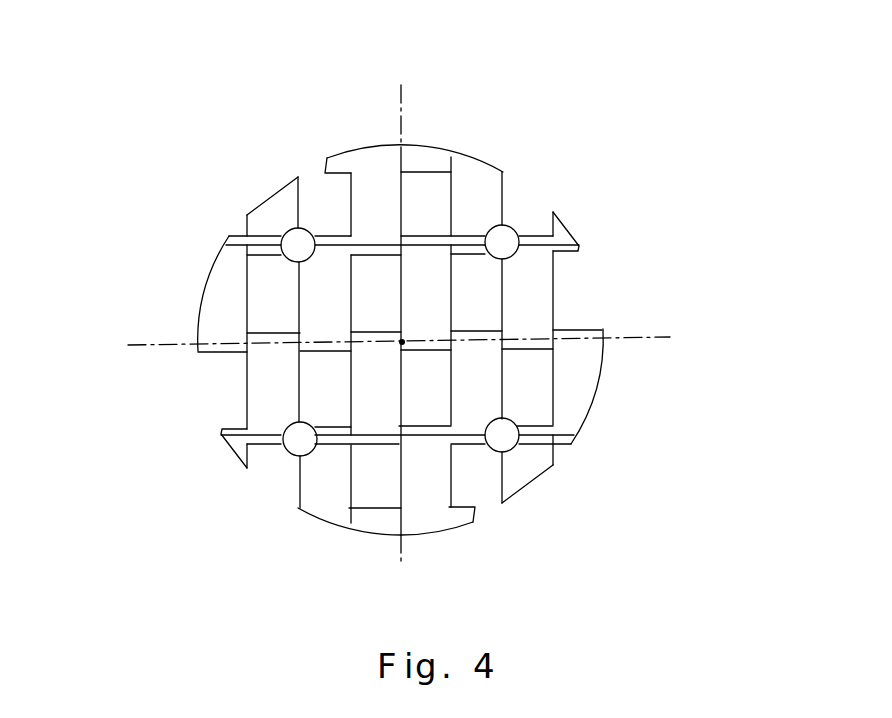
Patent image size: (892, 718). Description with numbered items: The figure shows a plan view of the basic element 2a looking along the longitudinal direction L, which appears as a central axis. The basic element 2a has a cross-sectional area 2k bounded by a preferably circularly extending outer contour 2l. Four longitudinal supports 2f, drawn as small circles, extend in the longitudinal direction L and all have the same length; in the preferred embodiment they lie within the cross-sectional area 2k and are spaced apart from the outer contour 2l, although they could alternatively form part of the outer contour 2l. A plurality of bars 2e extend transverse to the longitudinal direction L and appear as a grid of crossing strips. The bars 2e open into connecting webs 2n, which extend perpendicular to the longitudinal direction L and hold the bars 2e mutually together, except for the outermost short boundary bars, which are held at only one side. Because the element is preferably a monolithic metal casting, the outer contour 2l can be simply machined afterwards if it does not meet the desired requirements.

The basic element 2a is at (582, 77).
The bars 2e is at (483, 185).
The longitudinal supports 2f is at (292, 243).
The cross-sectional area 2k is at (583, 353).
The outer contour 2l is at (618, 405).
The connecting webs 2n is at (425, 160).
The longitudinal direction L is at (402, 342).